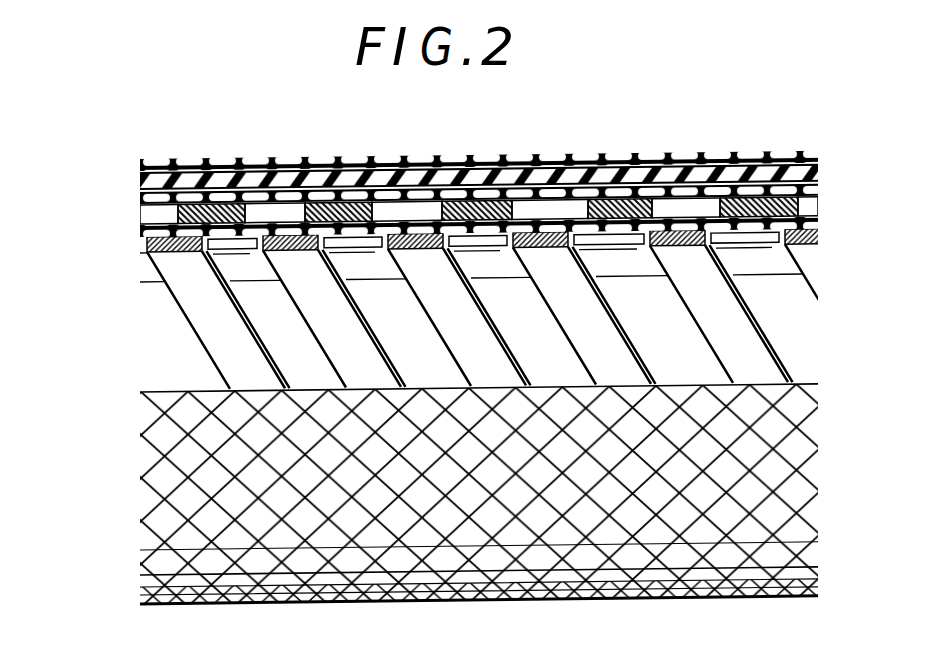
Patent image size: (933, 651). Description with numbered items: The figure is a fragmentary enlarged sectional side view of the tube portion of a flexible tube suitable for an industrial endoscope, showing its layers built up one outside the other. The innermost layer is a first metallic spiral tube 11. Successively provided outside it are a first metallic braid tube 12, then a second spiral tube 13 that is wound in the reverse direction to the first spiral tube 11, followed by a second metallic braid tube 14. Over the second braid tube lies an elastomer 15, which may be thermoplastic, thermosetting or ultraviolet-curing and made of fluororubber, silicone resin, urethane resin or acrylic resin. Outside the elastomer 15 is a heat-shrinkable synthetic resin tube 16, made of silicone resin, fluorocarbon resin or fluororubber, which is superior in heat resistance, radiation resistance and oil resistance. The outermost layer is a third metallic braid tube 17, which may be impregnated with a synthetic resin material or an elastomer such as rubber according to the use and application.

The first metallic spiral tube 11 is at (688, 247).
The first metallic braid tube 12 is at (143, 230).
The second spiral tube 13 is at (800, 207).
The second metallic braid tube 14 is at (143, 202).
The elastomer 15 is at (810, 182).
The heat-shrinkable synthetic resin tube 16 is at (143, 187).
The third metallic braid tube 17 is at (787, 152).